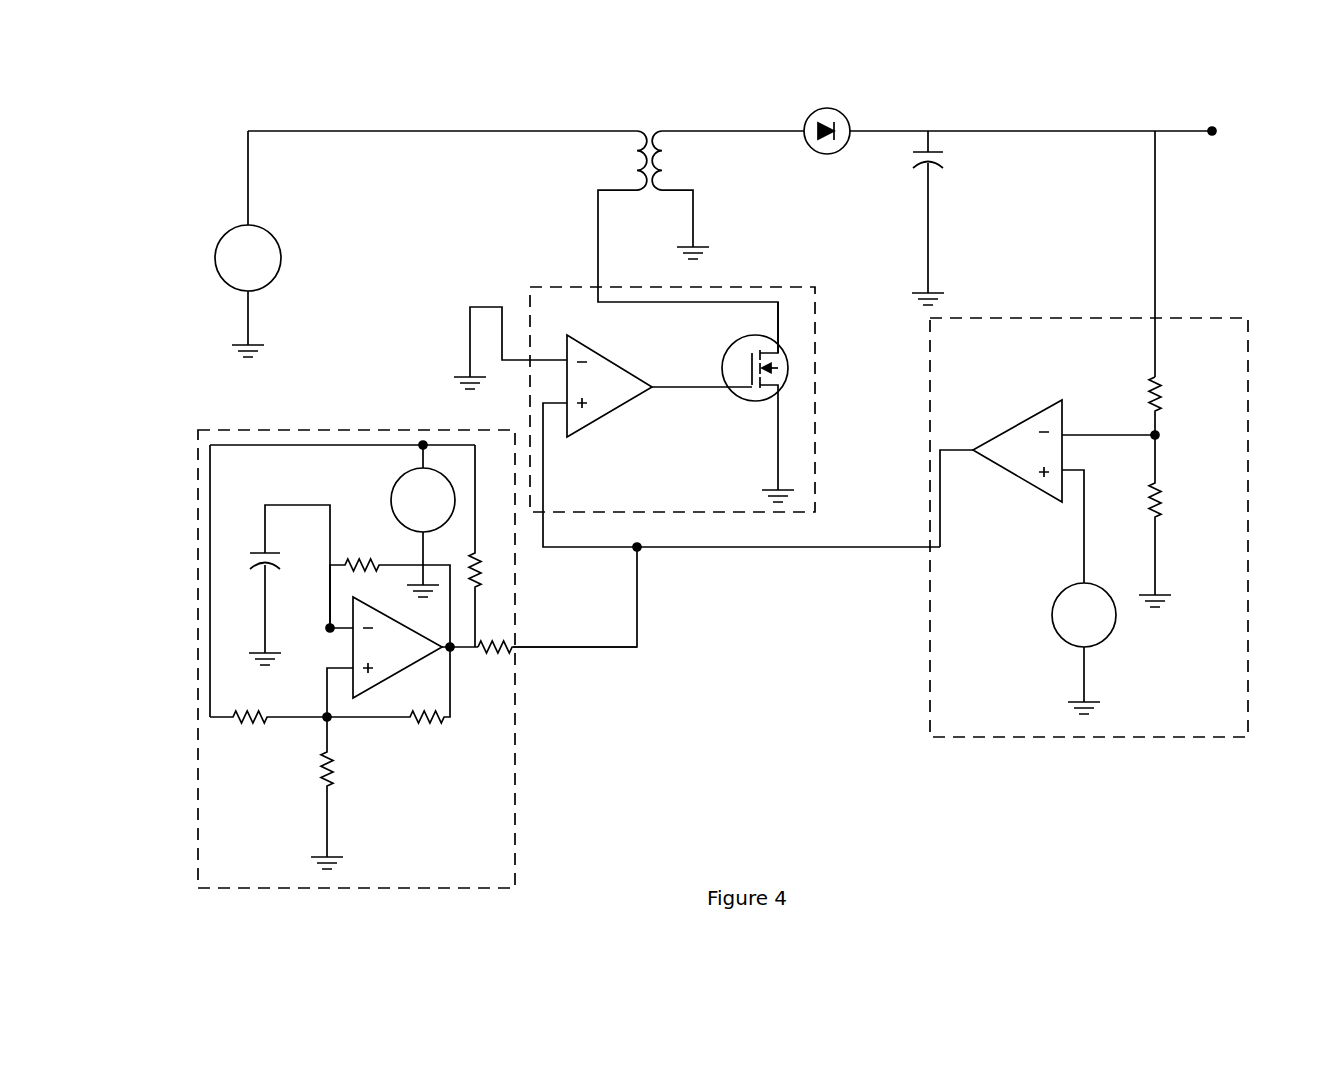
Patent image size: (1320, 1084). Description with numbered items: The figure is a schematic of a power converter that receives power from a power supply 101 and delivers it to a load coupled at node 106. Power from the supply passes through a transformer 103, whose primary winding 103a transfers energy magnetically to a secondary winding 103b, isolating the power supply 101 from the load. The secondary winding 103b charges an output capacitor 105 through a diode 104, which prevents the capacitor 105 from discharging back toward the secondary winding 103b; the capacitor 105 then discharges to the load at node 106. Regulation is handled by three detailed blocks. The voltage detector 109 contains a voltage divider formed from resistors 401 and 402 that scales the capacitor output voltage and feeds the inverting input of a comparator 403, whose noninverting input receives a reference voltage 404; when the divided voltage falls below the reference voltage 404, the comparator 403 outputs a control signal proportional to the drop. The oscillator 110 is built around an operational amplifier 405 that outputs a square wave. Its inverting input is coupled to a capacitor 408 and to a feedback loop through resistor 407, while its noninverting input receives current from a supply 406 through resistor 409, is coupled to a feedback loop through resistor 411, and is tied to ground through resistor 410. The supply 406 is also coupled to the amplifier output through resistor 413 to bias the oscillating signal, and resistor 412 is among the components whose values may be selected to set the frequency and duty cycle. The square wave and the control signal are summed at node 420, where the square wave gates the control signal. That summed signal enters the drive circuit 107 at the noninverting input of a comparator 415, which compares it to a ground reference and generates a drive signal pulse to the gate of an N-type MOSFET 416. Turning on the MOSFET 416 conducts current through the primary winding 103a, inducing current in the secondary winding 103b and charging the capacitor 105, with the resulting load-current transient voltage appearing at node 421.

The power supply 101 is at (278, 246).
The node 421 is at (577, 127).
The transformer 103 is at (648, 242).
The primary winding 103a is at (637, 162).
The secondary winding 103b is at (667, 160).
The diode 104 is at (818, 154).
The output capacitor 105 is at (905, 178).
The node 106 is at (1214, 134).
The voltage detector 109 is at (930, 730).
The resistor 401 is at (1172, 392).
The resistor 402 is at (1172, 498).
The comparator 403 is at (1012, 428).
The reference voltage 404 is at (1053, 618).
The drive circuit 107 is at (715, 512).
The comparator 415 is at (598, 420).
The MOSFET 416 is at (783, 353).
The node 420 is at (640, 550).
The oscillator 110 is at (515, 815).
The supply 406 is at (398, 477).
The resistor 407 is at (358, 553).
The capacitor 408 is at (245, 553).
The resistor 409 is at (245, 722).
The resistor 410 is at (312, 780).
The resistor 411 is at (432, 725).
The resistor 412 is at (500, 663).
The resistor 413 is at (488, 565).
The operational amplifier 405 is at (377, 685).